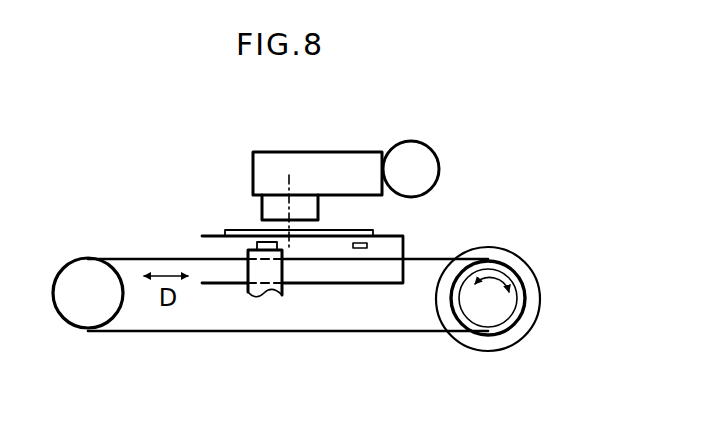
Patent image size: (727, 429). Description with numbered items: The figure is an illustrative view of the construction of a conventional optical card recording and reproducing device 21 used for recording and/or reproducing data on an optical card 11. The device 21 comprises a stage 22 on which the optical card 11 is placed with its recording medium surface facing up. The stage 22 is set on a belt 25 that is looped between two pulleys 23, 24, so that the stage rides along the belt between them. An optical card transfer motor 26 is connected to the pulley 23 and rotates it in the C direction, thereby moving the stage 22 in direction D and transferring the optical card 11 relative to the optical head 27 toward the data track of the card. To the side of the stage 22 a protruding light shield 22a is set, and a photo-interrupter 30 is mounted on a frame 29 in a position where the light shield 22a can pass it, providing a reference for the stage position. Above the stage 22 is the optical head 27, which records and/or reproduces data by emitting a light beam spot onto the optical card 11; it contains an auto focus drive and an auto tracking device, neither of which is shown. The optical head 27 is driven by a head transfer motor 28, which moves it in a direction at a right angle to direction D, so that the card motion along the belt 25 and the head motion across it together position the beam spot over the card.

The optical card 11 is at (370, 231).
The optical card recording and reproducing device 21 is at (512, 134).
The stage 22 is at (408, 253).
The protruding light shield 22a is at (360, 248).
The pulley 23 is at (508, 312).
The pulley 24 is at (83, 312).
The belt 25 is at (148, 258).
The optical card transfer motor 26 is at (536, 290).
The optical head 27 is at (307, 163).
The head transfer motor 28 is at (427, 157).
The frame 29 is at (262, 297).
The photo-interrupter 30 is at (262, 242).